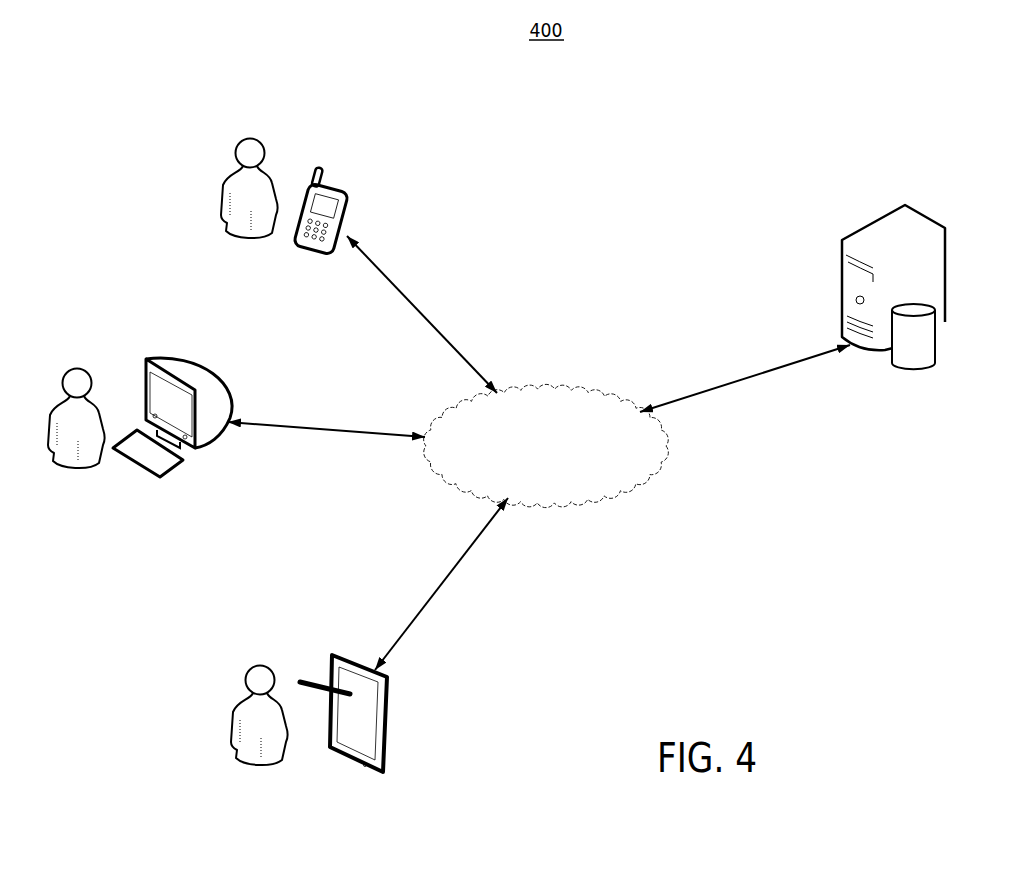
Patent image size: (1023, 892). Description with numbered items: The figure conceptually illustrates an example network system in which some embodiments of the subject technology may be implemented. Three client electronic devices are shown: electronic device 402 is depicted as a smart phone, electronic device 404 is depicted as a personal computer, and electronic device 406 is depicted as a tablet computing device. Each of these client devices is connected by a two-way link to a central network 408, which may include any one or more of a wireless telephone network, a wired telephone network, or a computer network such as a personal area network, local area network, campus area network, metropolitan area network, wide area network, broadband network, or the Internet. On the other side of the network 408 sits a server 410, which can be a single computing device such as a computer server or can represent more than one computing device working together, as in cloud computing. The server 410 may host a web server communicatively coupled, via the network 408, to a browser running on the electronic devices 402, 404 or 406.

The electronic device 402 is at (334, 186).
The electronic device 404 is at (203, 366).
The electronic device 406 is at (337, 650).
The network 408 is at (547, 388).
The server 410 is at (905, 205).